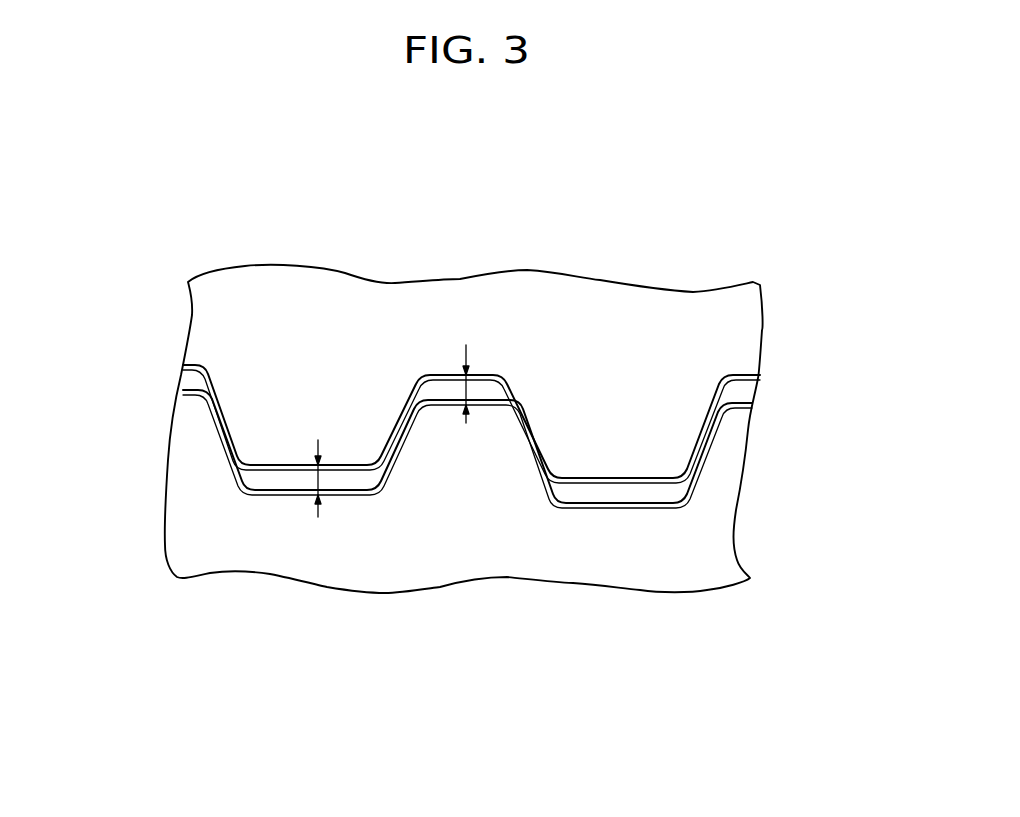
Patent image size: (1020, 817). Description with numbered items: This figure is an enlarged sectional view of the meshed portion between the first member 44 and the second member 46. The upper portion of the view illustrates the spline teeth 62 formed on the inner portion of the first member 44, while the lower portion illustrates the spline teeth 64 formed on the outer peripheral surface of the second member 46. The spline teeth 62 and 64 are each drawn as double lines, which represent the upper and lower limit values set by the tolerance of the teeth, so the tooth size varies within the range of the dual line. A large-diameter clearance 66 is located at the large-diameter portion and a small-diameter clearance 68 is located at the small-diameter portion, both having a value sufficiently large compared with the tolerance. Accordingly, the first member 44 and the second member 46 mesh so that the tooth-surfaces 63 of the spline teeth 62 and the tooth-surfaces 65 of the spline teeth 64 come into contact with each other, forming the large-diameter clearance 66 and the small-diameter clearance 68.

The first member 44 is at (694, 308).
The second member 46 is at (431, 566).
The spline teeth 62 is at (772, 460).
The tooth-surfaces 63 is at (532, 441).
The spline teeth 64 is at (441, 447).
The tooth-surfaces 65 is at (538, 448).
The large-diameter clearance 66 is at (456, 377).
The small-diameter clearance 68 is at (318, 478).